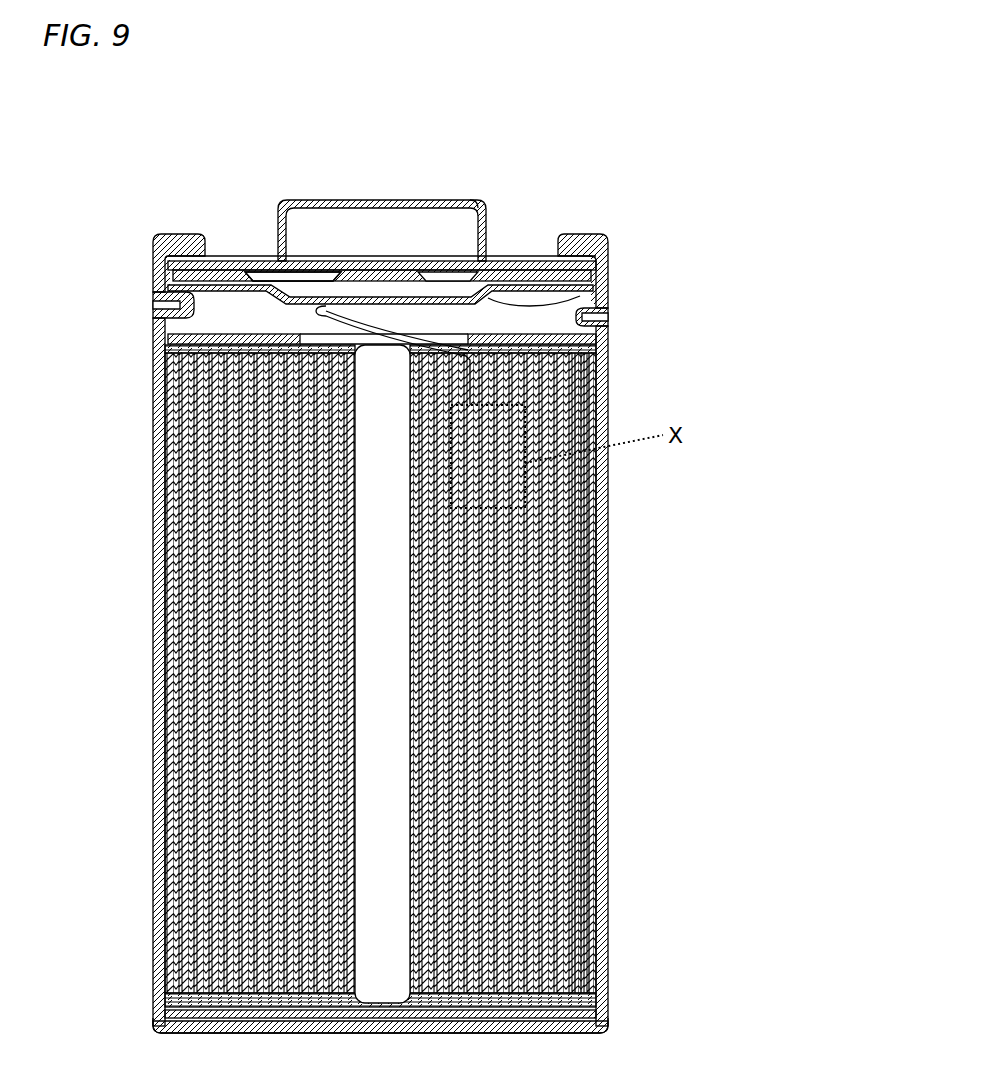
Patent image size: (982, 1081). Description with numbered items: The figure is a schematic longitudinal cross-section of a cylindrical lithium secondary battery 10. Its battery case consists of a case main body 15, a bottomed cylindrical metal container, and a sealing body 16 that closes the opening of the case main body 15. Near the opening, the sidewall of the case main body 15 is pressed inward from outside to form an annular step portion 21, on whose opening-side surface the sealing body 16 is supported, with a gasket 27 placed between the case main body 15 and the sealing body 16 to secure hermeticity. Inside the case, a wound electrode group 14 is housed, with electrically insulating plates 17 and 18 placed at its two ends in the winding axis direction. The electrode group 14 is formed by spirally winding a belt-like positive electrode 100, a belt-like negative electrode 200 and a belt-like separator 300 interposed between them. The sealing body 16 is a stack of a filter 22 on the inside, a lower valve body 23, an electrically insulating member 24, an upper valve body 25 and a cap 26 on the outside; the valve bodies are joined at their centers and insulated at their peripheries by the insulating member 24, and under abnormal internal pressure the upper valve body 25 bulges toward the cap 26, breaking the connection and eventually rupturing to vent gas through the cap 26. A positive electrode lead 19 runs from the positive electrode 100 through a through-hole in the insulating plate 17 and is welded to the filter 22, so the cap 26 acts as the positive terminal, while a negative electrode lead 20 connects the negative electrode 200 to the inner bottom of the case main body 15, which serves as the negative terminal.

The lithium secondary battery 10 is at (588, 95).
The wound electrode group 14 is at (456, 676).
The case main body 15 is at (601, 220).
The sealing body 16 is at (476, 191).
The insulating plate 17 is at (597, 331).
The insulating plate 18 is at (600, 1022).
The positive electrode lead 19 is at (305, 316).
The negative electrode lead 20 is at (156, 998).
The step portion 21 is at (245, 326).
The filter 22 is at (600, 283).
The lower valve body 23 is at (253, 270).
The insulating member 24 is at (237, 255).
The upper valve body 25 is at (292, 268).
The cap 26 is at (417, 193).
The gasket 27 is at (597, 250).
The positive electrode 100 is at (575, 745).
The negative electrode 200 is at (582, 777).
The separator 300 is at (700, 705).